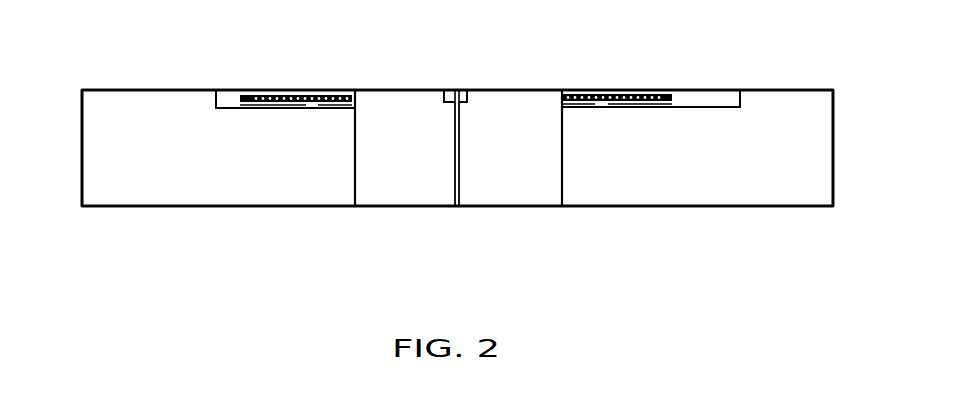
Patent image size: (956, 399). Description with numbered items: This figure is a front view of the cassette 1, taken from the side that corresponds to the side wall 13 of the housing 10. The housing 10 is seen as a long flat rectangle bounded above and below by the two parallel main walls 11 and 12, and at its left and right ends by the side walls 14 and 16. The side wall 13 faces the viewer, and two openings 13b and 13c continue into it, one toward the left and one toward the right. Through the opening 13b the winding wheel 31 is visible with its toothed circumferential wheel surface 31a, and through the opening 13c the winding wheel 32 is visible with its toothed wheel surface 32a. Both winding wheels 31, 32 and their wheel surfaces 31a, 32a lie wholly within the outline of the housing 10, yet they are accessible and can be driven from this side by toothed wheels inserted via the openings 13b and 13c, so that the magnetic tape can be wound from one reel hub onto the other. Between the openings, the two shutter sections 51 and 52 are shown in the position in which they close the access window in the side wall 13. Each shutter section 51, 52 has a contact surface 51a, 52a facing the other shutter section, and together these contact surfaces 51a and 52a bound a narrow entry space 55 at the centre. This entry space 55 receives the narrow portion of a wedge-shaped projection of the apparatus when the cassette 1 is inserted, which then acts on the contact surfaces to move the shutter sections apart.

The cassette 1 is at (78, 82).
The housing 10 is at (832, 90).
The main wall 11 is at (122, 90).
The main wall 12 is at (135, 207).
The side wall 13 is at (205, 178).
The opening 13b is at (224, 100).
The opening 13c is at (720, 100).
The side wall 14 is at (82, 172).
The side wall 16 is at (833, 168).
The winding wheel 31 is at (271, 95).
The wheel surface 31a is at (330, 98).
The winding wheel 32 is at (629, 95).
The wheel surface 32a is at (585, 98).
The shutter section 51 is at (406, 178).
The contact surface 51a is at (448, 91).
The shutter section 52 is at (521, 178).
The contact surface 52a is at (465, 91).
The entry space 55 is at (456, 92).